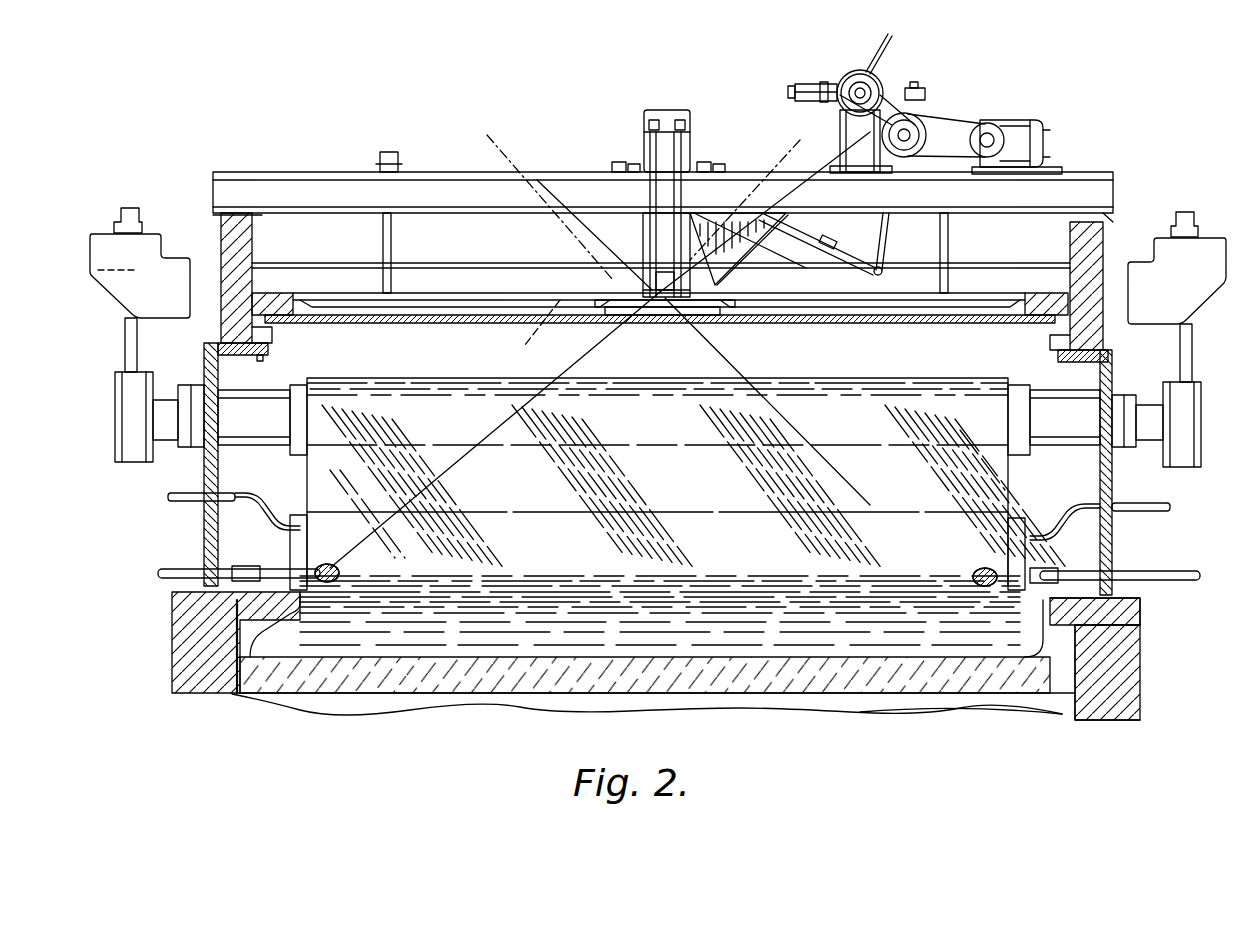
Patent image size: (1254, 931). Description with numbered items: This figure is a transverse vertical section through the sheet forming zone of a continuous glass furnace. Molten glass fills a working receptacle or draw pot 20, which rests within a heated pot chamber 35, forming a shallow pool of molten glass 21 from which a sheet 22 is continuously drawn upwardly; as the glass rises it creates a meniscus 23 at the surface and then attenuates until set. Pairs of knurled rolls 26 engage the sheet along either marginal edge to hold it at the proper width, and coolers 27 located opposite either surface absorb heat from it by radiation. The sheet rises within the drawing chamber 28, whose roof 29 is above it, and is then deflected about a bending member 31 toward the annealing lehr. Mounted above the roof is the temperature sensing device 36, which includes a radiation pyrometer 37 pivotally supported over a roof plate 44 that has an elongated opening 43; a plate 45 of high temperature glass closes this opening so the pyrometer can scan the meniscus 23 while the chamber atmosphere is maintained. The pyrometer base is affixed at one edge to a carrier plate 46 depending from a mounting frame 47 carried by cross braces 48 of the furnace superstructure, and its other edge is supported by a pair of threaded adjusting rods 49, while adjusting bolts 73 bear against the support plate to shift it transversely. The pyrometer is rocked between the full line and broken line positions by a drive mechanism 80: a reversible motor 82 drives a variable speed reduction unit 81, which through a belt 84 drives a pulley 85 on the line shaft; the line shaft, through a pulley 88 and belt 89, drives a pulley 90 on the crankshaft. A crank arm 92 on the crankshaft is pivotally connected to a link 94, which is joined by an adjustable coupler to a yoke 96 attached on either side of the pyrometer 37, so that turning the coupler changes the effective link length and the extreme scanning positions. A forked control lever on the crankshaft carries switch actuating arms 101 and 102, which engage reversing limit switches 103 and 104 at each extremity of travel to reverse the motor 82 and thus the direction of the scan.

The draw pot 20 is at (480, 696).
The pool of molten glass 21 is at (425, 637).
The sheet 22 is at (318, 479).
The meniscus 23 is at (385, 592).
The knurled rolls 26 is at (340, 573).
The coolers 27 is at (298, 548).
The drawing chamber 28 is at (462, 305).
The roof 29 is at (447, 294).
The bending member 31 is at (297, 384).
The pot chamber 35 is at (832, 712).
The temperature sensing device 36 is at (780, 86).
The radiation pyrometer 37 is at (745, 245).
The elongated opening 43 is at (656, 300).
The roof plate 44 is at (460, 327).
The plate of high temperature glass 45 is at (672, 300).
The carrier plate 46 is at (665, 153).
The mounting frame 47 is at (648, 108).
The cross braces 48 is at (340, 180).
The threaded adjusting rods 49 is at (645, 140).
The adjusting bolts 73 is at (717, 166).
The drive mechanism 80 is at (998, 116).
The variable speed reduction unit 81 is at (1030, 118).
The reversible motor 82 is at (984, 124).
The belt 84 is at (946, 134).
The pulley 85 is at (920, 126).
The pulley 88 is at (898, 136).
The belt 89 is at (906, 119).
The pulley 90 is at (850, 80).
The crank arm 92 is at (880, 238).
The link 94 is at (860, 262).
The yoke 96 is at (780, 238).
The switch actuating arm 101 is at (822, 84).
The switch actuating arm 102 is at (884, 48).
The reversing limit switch 103 is at (790, 95).
The reversing limit switch 104 is at (917, 86).